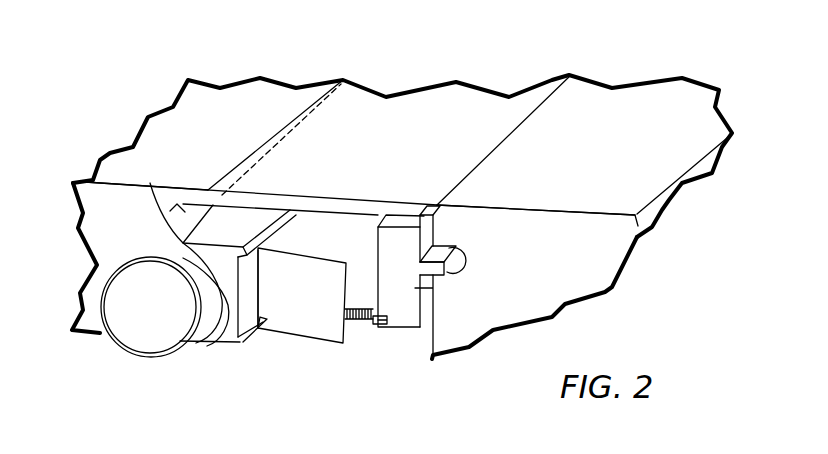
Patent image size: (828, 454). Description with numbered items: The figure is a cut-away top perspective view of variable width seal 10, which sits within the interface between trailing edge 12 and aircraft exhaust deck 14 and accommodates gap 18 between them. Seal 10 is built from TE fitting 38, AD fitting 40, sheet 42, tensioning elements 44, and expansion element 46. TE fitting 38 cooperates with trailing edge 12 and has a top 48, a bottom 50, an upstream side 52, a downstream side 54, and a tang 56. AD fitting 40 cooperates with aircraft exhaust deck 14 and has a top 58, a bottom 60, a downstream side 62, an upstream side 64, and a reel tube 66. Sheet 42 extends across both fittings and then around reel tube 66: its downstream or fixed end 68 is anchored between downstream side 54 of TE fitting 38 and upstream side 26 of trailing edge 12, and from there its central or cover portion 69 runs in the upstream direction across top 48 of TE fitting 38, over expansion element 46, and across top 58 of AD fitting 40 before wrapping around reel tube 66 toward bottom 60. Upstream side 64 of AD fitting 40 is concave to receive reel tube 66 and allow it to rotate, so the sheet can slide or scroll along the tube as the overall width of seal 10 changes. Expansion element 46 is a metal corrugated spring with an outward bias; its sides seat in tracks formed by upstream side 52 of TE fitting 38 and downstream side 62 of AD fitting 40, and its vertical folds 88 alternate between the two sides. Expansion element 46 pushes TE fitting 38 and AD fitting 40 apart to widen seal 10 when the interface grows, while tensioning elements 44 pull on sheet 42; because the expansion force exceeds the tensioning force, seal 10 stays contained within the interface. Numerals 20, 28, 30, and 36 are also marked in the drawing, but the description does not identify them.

The variable width seal 10 is at (590, 58).
The trailing edge 12 is at (644, 240).
The aircraft exhaust deck 14 is at (63, 241).
The gap 18 is at (276, 148).
The second panel portion 20 is at (602, 133).
The upstream side of trailing edge 26 is at (463, 212).
The retention block 28 is at (470, 248).
The first panel portion 30 is at (178, 127).
The tab 36 is at (170, 210).
The TE fitting 38 is at (404, 343).
The AD fitting 40 is at (217, 352).
The sheet 42 is at (485, 123).
The tensioning elements 44 is at (358, 324).
The expansion element 46 is at (309, 324).
The top of TE fitting 48 is at (397, 225).
The bottom of TE fitting 50 is at (394, 324).
The upstream side of TE fitting 52 is at (378, 292).
The downstream side of TE fitting 54 is at (424, 322).
The tang 56 is at (452, 265).
The top of AD fitting 58 is at (215, 242).
The bottom of AD fitting 60 is at (217, 339).
The downstream side of AD fitting 62 is at (247, 327).
The upstream side of AD fitting 64 is at (172, 250).
The reel tube 66 is at (120, 337).
The downstream or fixed end of sheet 68 is at (426, 207).
The central or cover portion of sheet 69 is at (376, 143).
The folds 88 is at (265, 324).